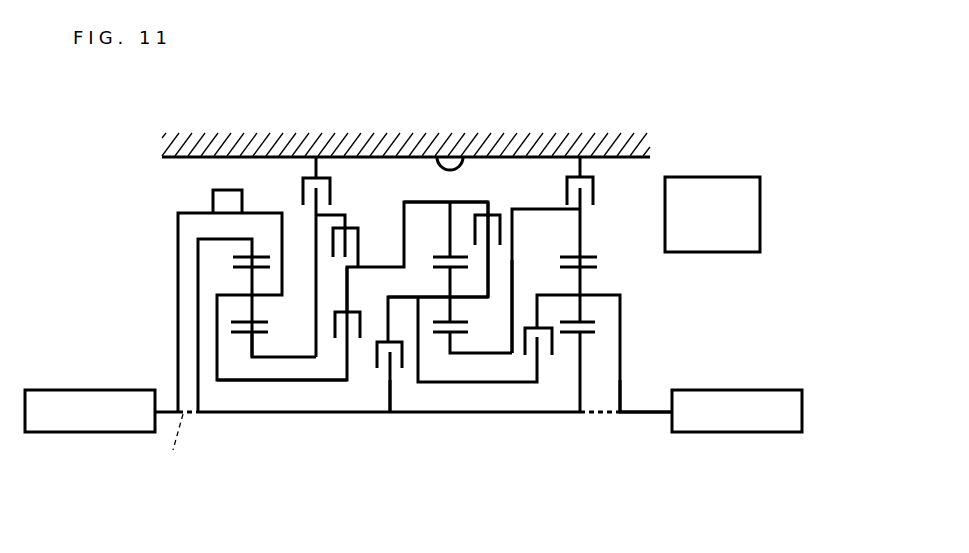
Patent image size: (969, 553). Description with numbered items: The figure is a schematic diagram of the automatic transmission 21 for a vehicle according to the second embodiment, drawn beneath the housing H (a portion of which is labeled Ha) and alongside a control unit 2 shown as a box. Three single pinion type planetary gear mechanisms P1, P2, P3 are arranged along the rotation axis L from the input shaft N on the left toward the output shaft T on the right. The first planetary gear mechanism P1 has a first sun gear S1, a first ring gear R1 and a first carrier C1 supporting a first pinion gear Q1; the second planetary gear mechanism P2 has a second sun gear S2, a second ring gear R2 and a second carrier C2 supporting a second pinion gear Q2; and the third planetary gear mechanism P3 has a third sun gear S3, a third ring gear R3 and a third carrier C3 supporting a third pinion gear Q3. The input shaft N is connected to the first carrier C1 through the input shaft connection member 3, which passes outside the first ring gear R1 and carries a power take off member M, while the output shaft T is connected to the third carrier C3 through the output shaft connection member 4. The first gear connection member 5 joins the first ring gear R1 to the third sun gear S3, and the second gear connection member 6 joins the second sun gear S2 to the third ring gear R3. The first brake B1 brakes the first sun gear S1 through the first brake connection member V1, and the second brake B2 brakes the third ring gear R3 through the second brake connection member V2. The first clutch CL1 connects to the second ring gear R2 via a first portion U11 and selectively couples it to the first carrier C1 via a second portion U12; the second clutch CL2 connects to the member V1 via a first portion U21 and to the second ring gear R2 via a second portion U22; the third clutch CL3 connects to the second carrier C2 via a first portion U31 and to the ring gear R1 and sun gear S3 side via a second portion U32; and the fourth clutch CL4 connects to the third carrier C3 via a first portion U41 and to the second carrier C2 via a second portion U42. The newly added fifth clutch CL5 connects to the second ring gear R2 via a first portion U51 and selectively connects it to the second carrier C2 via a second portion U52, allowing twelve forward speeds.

The housing H is at (383, 153).
The housing portion Ha is at (465, 156).
The automatic transmission 21 is at (549, 125).
The transmission control unit (TM-ECU) 2 is at (697, 177).
The input shaft N is at (102, 432).
The output shaft T is at (718, 432).
The first gear connection member 5 is at (228, 413).
The rotation axis L is at (174, 446).
The input shaft connection member 3 is at (178, 272).
The power take off member M is at (225, 190).
The first carrier C1 is at (233, 293).
The first ring gear R1 is at (258, 255).
The first pinion gear Q1 is at (253, 313).
The first sun gear S1 is at (255, 346).
The first brake connection member V1 is at (313, 233).
The first brake B1 is at (334, 187).
The first portion of second clutch connection member U21 is at (340, 215).
The second clutch CL2 is at (382, 246).
The second portion of second clutch connection member U22 is at (408, 202).
The first portion of first clutch connection member U11 is at (348, 282).
The first clutch CL1 is at (378, 320).
The second portion of first clutch connection member U12 is at (285, 382).
The third clutch CL3 is at (371, 356).
The second portion of third clutch connection member U32 is at (393, 398).
The first portion of third clutch connection member U31 is at (399, 297).
The second ring gear R2 is at (448, 255).
The second carrier C2 is at (453, 297).
The first portion of fifth clutch connection member U51 is at (465, 203).
The fifth clutch CL5 is at (501, 211).
The second portion of fifth clutch connection member U52 is at (483, 297).
The second pinion gear Q2 is at (450, 313).
The second sun gear S2 is at (452, 352).
The second gear connection member 6 is at (530, 209).
The first portion of fourth clutch connection member U41 is at (540, 295).
The second portion of fourth clutch connection member U42 is at (468, 381).
The fourth clutch CL4 is at (554, 348).
The third carrier C3 is at (592, 293).
The output shaft connection member 4 is at (620, 383).
The second brake B2 is at (598, 189).
The second brake connection member V2 is at (585, 220).
The third ring gear R3 is at (585, 258).
The third pinion gear Q3 is at (581, 313).
The third sun gear S3 is at (582, 343).
The first planetary gear mechanism P1 is at (268, 368).
The second planetary gear mechanism P2 is at (466, 341).
The third planetary gear mechanism P3 is at (568, 341).